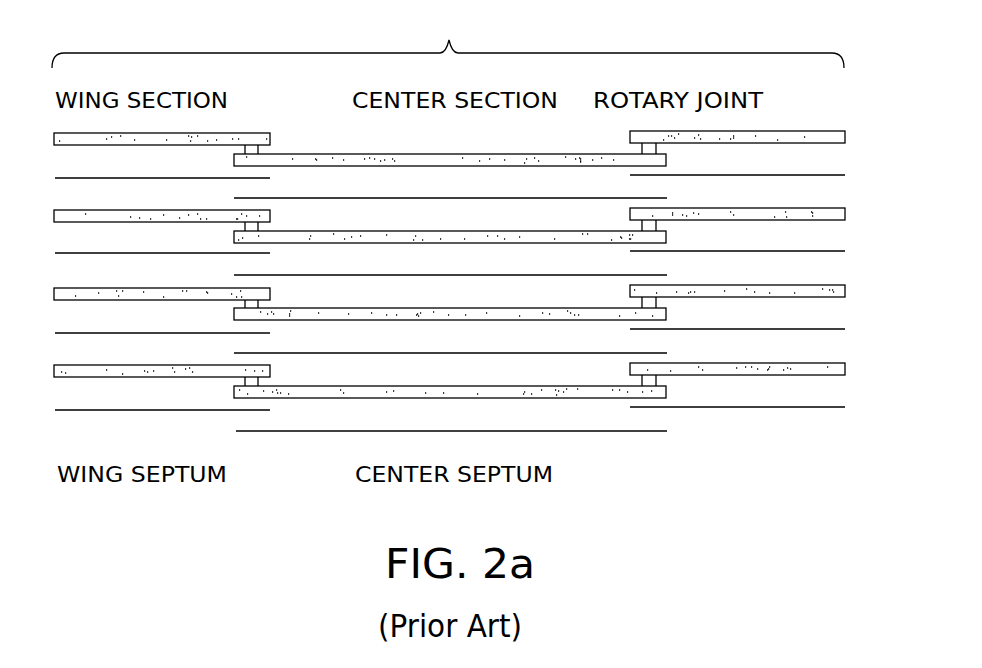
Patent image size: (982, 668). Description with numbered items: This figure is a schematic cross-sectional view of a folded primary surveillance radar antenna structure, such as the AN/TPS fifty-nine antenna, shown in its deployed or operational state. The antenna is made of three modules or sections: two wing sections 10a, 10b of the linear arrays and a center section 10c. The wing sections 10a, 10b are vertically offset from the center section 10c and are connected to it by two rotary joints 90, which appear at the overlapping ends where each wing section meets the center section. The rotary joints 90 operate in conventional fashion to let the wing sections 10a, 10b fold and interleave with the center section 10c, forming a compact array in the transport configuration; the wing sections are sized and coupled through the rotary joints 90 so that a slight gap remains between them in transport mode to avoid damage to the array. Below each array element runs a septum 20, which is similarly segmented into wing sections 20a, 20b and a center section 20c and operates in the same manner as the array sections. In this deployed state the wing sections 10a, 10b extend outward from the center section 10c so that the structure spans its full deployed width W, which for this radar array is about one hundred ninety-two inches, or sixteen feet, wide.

The width in deployed mode W is at (448, 39).
The wing section 10a is at (235, 132).
The wing section 10b is at (773, 130).
The center section 10c is at (412, 153).
The rotary joint 90 is at (258, 150).
The septum 20 is at (322, 431).
The wing section of septum 20a is at (192, 411).
The wing section of septum 20b is at (720, 407).
The center section of septum 20c is at (562, 432).